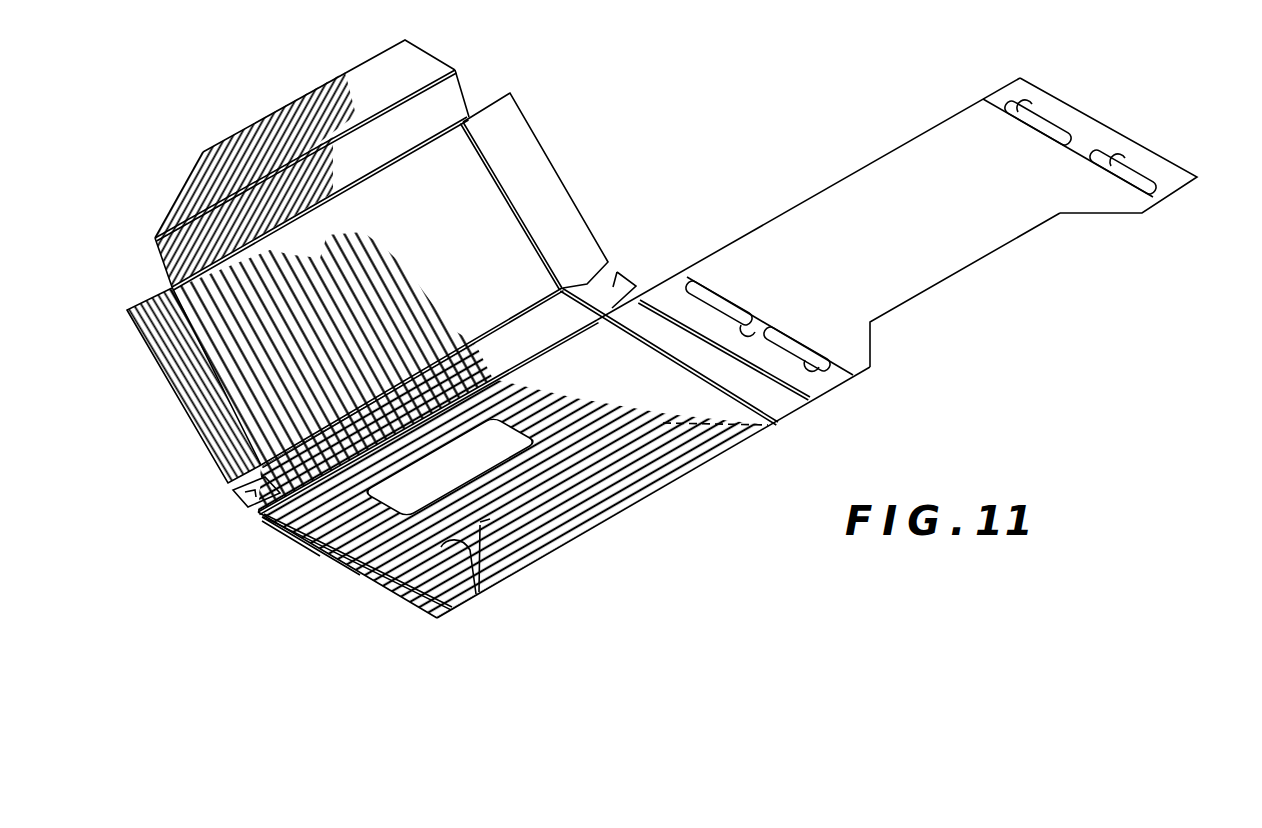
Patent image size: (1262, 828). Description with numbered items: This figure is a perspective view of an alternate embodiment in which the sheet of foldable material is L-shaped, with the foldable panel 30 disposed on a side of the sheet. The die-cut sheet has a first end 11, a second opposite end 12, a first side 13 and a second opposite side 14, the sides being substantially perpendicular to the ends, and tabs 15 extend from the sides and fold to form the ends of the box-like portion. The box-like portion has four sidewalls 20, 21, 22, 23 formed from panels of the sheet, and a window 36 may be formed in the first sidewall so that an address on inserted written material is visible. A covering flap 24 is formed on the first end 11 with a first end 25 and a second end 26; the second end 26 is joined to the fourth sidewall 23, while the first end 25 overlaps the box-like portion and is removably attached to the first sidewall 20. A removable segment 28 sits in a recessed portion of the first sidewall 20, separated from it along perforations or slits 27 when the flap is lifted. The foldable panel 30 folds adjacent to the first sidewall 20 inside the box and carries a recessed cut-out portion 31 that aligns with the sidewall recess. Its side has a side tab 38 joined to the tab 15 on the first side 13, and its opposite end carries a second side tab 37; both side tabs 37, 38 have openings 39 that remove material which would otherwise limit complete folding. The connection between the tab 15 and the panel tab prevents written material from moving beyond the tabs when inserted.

The first end 11 is at (233, 138).
The second opposite end 12 is at (643, 493).
The first side 13 is at (530, 218).
The second opposite side 14 is at (207, 360).
The tabs 15 is at (507, 127).
The first sidewall 20 is at (472, 598).
The second sidewall 21 is at (560, 262).
The third sidewall 22 is at (520, 192).
The fourth sidewall 23 is at (460, 103).
The covering flap 24 is at (360, 96).
The first end of covering flap 25 is at (316, 92).
The second end of covering flap 26 is at (420, 90).
The perforations or slits 27 is at (513, 515).
The segment 28 is at (588, 530).
The foldable panel 30 is at (883, 200).
The cut-out portion 31 is at (957, 273).
The window 36 is at (388, 572).
The first side tab 37 is at (1087, 130).
The second side tab 38 is at (817, 376).
The openings 39 is at (800, 345).